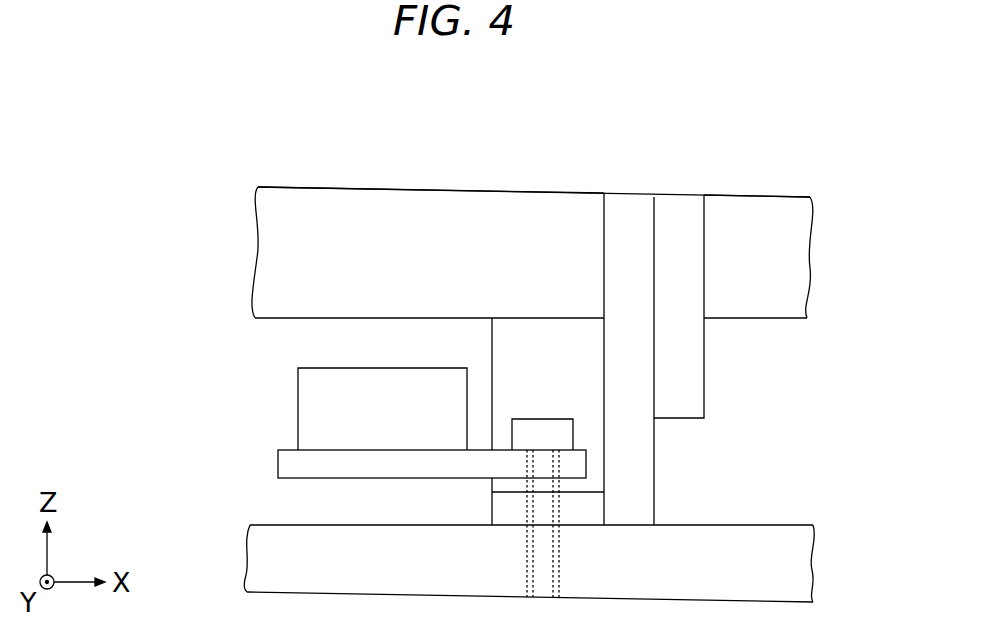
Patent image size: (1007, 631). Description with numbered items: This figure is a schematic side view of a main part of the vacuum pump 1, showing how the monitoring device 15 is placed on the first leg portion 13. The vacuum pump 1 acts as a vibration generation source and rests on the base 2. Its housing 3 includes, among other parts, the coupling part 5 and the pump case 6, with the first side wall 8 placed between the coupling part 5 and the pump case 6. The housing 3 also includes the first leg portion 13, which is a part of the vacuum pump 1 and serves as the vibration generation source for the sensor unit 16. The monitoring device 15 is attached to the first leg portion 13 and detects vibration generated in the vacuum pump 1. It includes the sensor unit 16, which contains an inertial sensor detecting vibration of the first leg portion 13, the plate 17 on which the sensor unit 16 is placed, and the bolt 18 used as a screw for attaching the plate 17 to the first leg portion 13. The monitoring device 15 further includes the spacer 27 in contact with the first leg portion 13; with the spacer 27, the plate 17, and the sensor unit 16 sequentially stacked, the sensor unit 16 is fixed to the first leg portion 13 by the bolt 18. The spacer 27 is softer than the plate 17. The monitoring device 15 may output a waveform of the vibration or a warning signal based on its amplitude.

The vacuum pump 1 is at (850, 124).
The base 2 is at (807, 562).
The housing 3 is at (532, 220).
The coupling part 5 is at (381, 197).
The pump case 6 is at (757, 208).
The first side wall 8 is at (679, 205).
The first leg portion 13 is at (643, 470).
The monitoring device 15 is at (238, 503).
The sensor unit 16 is at (297, 402).
The plate 17 is at (280, 463).
The bolt 18 is at (541, 418).
The spacer 27 is at (490, 482).